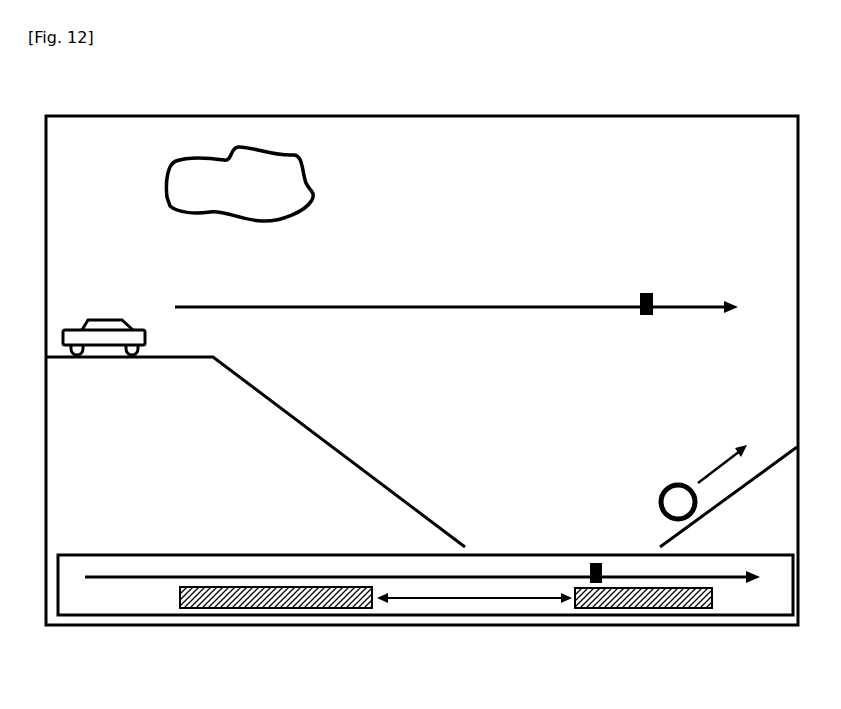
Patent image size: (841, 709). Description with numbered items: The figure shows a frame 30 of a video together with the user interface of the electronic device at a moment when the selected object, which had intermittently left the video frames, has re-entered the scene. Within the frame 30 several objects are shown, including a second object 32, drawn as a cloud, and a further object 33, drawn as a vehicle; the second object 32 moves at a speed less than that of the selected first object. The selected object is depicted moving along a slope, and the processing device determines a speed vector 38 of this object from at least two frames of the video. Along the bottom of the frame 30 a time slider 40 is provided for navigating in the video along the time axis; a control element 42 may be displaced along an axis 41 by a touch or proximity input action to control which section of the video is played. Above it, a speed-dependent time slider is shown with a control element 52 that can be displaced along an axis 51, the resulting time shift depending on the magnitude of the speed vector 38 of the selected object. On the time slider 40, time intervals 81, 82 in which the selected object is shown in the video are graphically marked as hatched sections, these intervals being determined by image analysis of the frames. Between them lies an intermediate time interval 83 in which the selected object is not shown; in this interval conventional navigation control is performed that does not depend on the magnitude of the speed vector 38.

The frame 30 is at (90, 110).
The second object 32 is at (312, 201).
The object 33 is at (110, 320).
The speed vector 38 is at (722, 466).
The time slider 40 is at (113, 548).
The axis 41 is at (258, 576).
The control element 42 is at (603, 561).
The axis 51 is at (696, 305).
The control element 52 is at (652, 292).
The time interval 81 is at (243, 609).
The time interval 82 is at (590, 609).
The intermediate time interval 83 is at (450, 600).